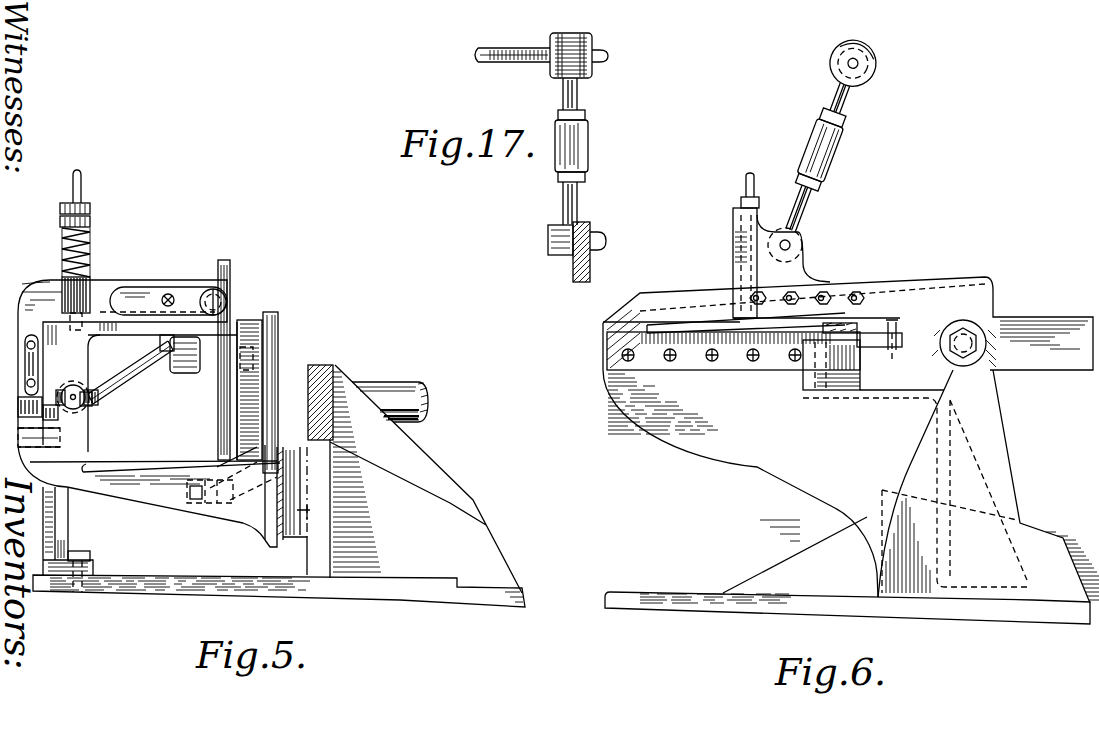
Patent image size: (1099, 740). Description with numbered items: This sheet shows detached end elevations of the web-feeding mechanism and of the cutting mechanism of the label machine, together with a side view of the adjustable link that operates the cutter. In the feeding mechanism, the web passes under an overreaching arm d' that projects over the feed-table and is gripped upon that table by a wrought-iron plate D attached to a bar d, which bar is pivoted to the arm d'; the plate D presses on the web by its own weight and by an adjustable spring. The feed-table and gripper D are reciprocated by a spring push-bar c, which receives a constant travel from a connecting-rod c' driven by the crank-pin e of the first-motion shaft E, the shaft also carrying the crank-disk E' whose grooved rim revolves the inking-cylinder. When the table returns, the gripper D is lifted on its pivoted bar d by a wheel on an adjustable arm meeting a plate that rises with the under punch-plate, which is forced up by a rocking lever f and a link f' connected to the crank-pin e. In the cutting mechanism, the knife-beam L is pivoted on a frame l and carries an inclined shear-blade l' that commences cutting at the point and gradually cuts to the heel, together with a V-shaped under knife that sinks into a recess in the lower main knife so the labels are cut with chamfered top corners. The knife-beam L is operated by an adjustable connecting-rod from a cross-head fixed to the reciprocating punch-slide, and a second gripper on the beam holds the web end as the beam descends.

In FIG. 5, the bar d is at (163, 285).
In FIG. 5, the overreaching arm d' is at (95, 292).
In FIG. 5, the wrought-iron plate D is at (228, 312).
In FIG. 5, the spring push-bar c is at (110, 377).
In FIG. 5, the connecting-rod c' is at (127, 370).
In FIG. 5, the crank-pin e is at (255, 355).
In FIG. 5, the first-motion shaft E is at (415, 472).
In FIG. 5, the crank-disk E' is at (286, 392).
In FIG. 5, the rocking lever f is at (181, 466).
In FIG. 5, the link f' is at (207, 360).
In FIG. 6, the frame l is at (851, 440).
In FIG. 6, the inclined shear-blade l' is at (746, 248).
In FIG. 17, the knife-beam L is at (592, 265).
In FIG. 6, the knife-beam L is at (794, 303).